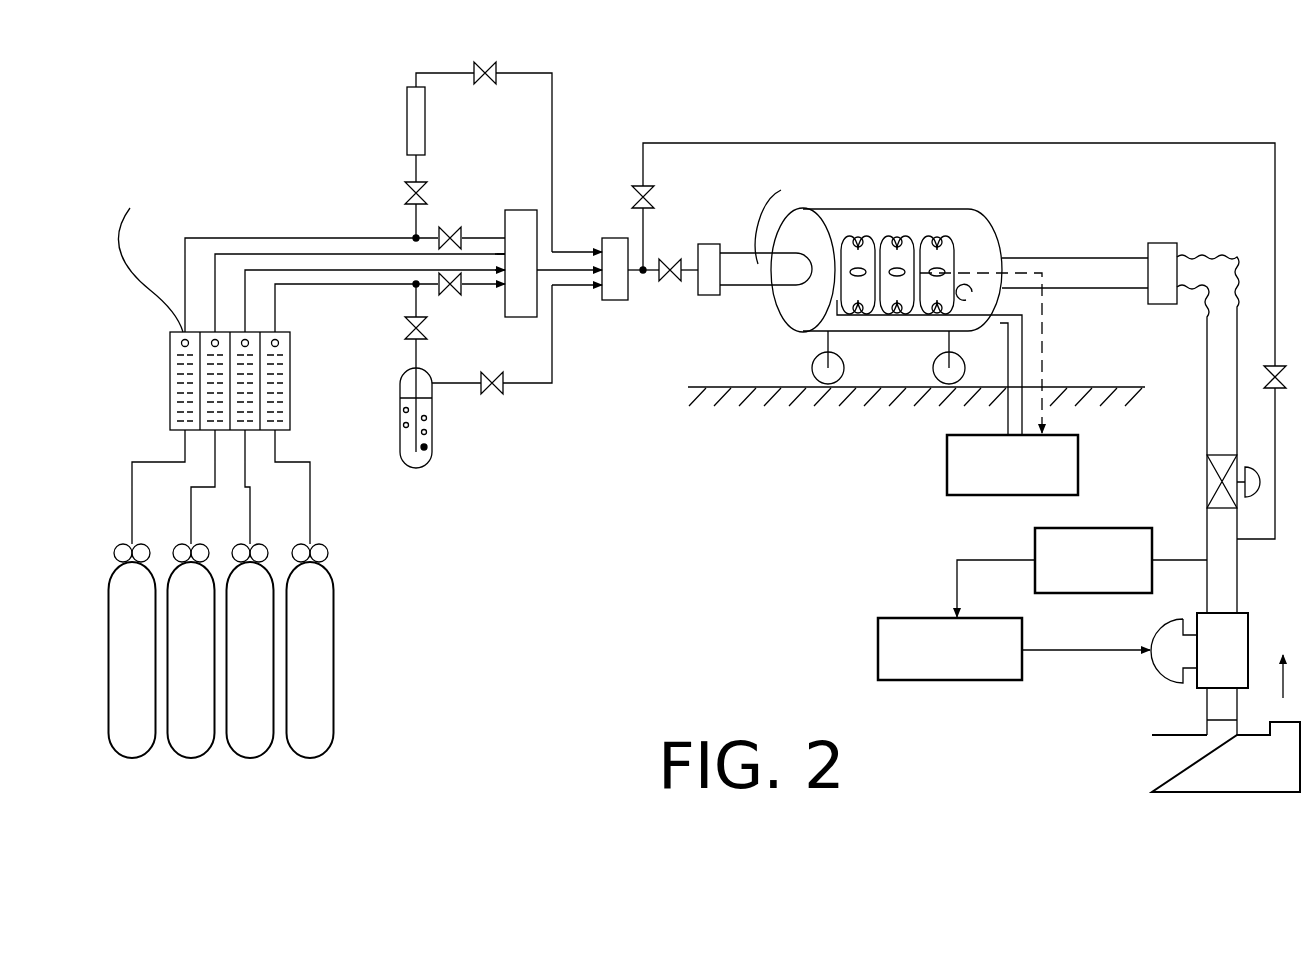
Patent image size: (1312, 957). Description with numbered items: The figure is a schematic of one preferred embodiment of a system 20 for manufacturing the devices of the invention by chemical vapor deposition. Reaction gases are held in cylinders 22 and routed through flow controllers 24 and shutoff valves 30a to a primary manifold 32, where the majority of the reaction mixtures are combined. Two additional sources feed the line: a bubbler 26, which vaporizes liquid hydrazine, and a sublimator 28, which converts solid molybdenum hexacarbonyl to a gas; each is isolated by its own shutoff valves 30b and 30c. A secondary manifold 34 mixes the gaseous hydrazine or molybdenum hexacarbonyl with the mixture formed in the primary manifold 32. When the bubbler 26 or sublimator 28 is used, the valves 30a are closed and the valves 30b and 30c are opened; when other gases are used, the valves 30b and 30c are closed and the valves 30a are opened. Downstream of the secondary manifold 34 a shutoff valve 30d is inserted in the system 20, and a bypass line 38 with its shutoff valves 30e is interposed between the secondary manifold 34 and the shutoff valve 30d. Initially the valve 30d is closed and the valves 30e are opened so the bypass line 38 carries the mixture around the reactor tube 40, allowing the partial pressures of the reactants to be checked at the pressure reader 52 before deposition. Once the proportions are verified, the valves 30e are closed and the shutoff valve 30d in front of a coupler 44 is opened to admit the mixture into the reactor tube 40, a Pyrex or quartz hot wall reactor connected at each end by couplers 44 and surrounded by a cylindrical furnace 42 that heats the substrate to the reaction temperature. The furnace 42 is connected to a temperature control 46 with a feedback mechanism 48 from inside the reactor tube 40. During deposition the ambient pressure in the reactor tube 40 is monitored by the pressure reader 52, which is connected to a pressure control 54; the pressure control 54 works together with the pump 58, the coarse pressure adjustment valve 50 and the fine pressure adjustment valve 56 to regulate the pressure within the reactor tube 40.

The system 20 is at (672, 474).
The cylinders 22 is at (335, 668).
The flow controller 24 is at (292, 383).
The bubbler 26 is at (433, 434).
The sublimator 28 is at (427, 130).
The shutoff valves 30a is at (448, 227).
The shutoff valves 30b is at (406, 194).
The shutoff valves 30c is at (498, 70).
The shutoff valve 30d is at (670, 260).
The shutoff valves 30e is at (648, 197).
The primary manifold 32 is at (522, 317).
The secondary manifold 34 is at (617, 300).
The bypass line 38 is at (852, 143).
The reactor tube 40 is at (731, 287).
The cylindrical furnace 42 is at (808, 333).
The couplers 44 is at (713, 296).
The temperature control 46 is at (957, 434).
The feedback mechanism 48 is at (1043, 340).
The coarse pressure adjustment valve 50 is at (1207, 478).
The pressure reader 52 is at (1033, 537).
The pressure control 54 is at (908, 617).
The fine pressure adjustment valve 56 is at (1162, 677).
The pump 58 is at (1152, 765).